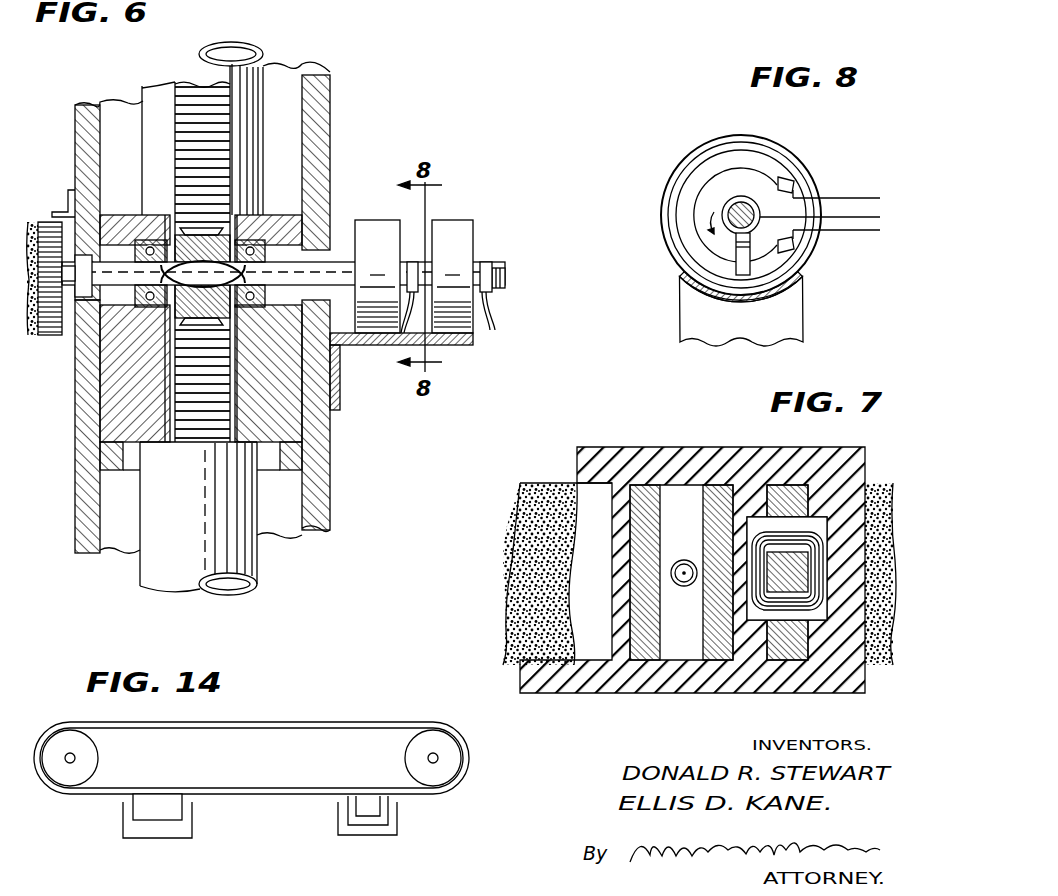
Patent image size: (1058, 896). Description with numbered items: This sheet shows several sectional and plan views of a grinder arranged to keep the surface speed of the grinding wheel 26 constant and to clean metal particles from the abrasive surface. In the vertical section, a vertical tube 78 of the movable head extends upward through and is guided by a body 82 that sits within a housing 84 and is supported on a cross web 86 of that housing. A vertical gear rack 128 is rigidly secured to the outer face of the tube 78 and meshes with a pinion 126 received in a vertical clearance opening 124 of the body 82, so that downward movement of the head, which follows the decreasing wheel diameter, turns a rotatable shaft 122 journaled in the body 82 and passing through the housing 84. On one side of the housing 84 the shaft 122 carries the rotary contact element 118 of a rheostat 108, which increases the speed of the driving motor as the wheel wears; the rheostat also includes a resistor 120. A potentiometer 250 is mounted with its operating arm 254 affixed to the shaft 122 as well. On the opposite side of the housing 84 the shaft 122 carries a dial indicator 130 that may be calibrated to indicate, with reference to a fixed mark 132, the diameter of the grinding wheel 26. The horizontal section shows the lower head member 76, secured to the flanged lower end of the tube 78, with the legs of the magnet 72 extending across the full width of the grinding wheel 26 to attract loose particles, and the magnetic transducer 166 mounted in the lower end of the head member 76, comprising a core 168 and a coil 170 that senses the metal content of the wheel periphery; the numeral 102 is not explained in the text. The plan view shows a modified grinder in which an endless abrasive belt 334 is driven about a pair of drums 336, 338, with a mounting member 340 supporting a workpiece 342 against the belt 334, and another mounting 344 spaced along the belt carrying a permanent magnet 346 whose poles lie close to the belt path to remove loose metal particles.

In FIG. 7, the grinding wheel 26 is at (545, 500).
In FIG. 7, the magnet 72 is at (648, 490).
In FIG. 7, the lower head member 76 is at (606, 680).
In FIG. 6, the vertical tube 78 is at (252, 75).
In FIG. 6, the body 82 is at (120, 406).
In FIG. 6, the housing 84 is at (320, 125).
In FIG. 6, the cross web 86 is at (285, 462).
In FIG. 7, the pickup coil conductor 102 is at (683, 588).
In FIG. 6, the rheostat 108 is at (366, 218).
In FIG. 8, the rheostat 108 is at (660, 250).
In FIG. 6, the rotary contact element 118 is at (403, 345).
In FIG. 8, the rotary contact element 118 is at (740, 268).
In FIG. 8, the resistor 120 is at (706, 176).
In FIG. 6, the rotatable shaft 122 is at (506, 278).
In FIG. 8, the rotatable shaft 122 is at (752, 205).
In FIG. 6, the vertical clearance opening 124 is at (170, 222).
In FIG. 6, the pinion 126 is at (215, 225).
In FIG. 6, the vertical gear rack 128 is at (183, 110).
In FIG. 6, the dial indicator 130 is at (50, 336).
In FIG. 6, the fixed mark 132 is at (68, 205).
In FIG. 7, the magnetic transducer 166 is at (815, 522).
In FIG. 7, the core 168 is at (780, 578).
In FIG. 7, the coil 170 is at (788, 505).
In FIG. 6, the potentiometer 250 is at (476, 220).
In FIG. 6, the operating arm 254 is at (485, 318).
In FIG. 14, the endless abrasive belt 334 is at (271, 793).
In FIG. 14, the drum 336 is at (63, 778).
In FIG. 14, the drum 338 is at (445, 780).
In FIG. 14, the mounting member 340 is at (178, 833).
In FIG. 14, the workpiece 342 is at (155, 813).
In FIG. 14, the mounting 344 is at (398, 836).
In FIG. 14, the permanent magnet 346 is at (366, 823).